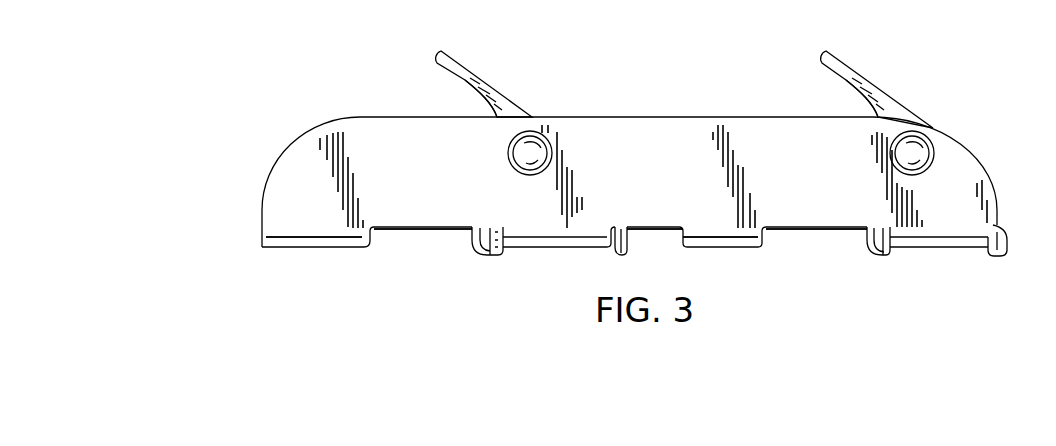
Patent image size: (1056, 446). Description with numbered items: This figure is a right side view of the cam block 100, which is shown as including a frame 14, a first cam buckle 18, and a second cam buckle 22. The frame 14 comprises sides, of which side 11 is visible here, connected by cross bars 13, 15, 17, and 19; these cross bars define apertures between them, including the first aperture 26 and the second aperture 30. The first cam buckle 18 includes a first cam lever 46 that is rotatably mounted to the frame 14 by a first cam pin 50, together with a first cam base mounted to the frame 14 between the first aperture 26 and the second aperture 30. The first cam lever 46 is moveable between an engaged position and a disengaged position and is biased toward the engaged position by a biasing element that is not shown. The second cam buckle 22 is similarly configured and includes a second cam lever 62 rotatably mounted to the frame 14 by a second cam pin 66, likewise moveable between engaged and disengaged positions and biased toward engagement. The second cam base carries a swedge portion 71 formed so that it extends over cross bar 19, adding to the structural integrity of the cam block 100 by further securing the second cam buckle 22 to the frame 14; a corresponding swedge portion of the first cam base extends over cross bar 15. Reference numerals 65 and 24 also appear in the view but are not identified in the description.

The cam block 100 is at (243, 155).
The frame 14 is at (612, 126).
The side 11 is at (670, 181).
The cross bar 13 is at (322, 250).
The first aperture 26 is at (421, 249).
The cross bar 15 is at (515, 250).
The clip 65 is at (620, 252).
The second aperture 30 is at (655, 243).
The cross bar 17 is at (751, 246).
The second recess 24 is at (814, 248).
The cross bar 19 is at (939, 250).
The swedge portion 71 is at (1003, 254).
The first cam buckle 18 is at (484, 61).
The first cam lever 46 is at (512, 108).
The second cam buckle 22 is at (878, 62).
The second cam lever 62 is at (891, 105).
The first cam pin 50 is at (528, 165).
The second cam pin 66 is at (926, 170).